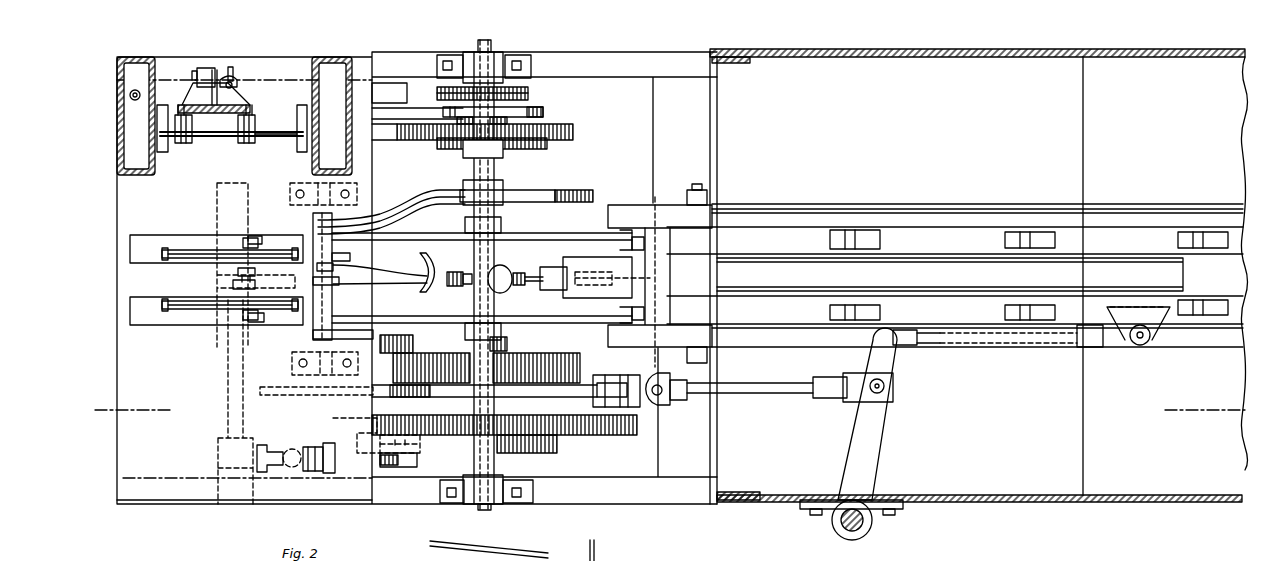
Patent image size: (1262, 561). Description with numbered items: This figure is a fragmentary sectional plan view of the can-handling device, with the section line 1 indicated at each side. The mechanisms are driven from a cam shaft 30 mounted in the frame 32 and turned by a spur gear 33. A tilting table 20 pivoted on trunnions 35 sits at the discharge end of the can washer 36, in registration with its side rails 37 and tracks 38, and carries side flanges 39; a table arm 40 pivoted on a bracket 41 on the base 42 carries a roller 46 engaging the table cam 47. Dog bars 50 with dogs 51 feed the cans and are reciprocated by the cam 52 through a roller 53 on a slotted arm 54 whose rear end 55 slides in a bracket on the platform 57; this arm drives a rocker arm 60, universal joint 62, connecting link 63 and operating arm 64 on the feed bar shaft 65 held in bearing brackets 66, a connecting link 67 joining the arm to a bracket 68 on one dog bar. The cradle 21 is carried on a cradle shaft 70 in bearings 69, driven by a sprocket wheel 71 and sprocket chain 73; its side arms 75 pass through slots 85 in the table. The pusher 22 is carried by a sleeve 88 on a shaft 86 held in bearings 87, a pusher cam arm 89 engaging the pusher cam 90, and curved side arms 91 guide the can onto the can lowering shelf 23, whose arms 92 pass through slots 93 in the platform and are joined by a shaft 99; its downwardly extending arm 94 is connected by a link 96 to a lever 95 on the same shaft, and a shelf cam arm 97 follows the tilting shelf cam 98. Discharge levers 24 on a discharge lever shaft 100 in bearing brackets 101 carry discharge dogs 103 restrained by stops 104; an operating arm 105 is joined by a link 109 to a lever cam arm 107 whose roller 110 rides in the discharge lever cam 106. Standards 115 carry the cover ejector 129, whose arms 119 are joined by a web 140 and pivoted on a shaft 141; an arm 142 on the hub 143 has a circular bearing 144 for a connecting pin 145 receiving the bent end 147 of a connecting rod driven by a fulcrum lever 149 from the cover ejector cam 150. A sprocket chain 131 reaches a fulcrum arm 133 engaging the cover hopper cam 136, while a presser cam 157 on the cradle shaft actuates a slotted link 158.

The section line 1 is at (674, 409).
The tilting table 20 is at (660, 210).
The cradle 21 is at (560, 224).
The pusher 22 is at (400, 282).
The can lowering shelf 23 is at (275, 250).
The discharge levers 24 is at (253, 338).
The cam shaft 30 is at (496, 458).
The frame 32 is at (633, 482).
The spur gear 33 is at (598, 425).
The trunnions 35 is at (687, 358).
The can washer 36 is at (1000, 498).
The side rails 37 is at (820, 338).
The tracks 38 is at (835, 262).
The side flanges 39 is at (645, 348).
The table arm 40 is at (575, 290).
The bracket 41 is at (550, 268).
The base 42 is at (700, 470).
The roller 46 is at (468, 288).
The table cam 47 is at (460, 290).
The dog bars 50 is at (1118, 320).
The dogs 51 is at (1210, 300).
The dog bar cam 52 is at (580, 360).
The roller 53 is at (430, 365).
The reciprocating slotted arm 54 is at (455, 390).
The rear end 55 is at (292, 398).
The platform 57 is at (185, 498).
The rocker arm 60 is at (602, 392).
The universal joint 62 is at (660, 408).
The connecting link 63 is at (770, 393).
The operating arm 64 is at (880, 445).
The feed bar shaft 65 is at (865, 532).
The bearing brackets 66 is at (818, 510).
The connecting link 67 is at (1065, 340).
The bracket 68 is at (1152, 325).
The bearings 69 is at (497, 508).
The cradle shaft 70 is at (478, 510).
The sprocket wheel 71 is at (528, 90).
The sprocket chain 73 is at (528, 97).
The side arms 75 is at (513, 318).
The slots 85 is at (630, 309).
The shaft 86 is at (338, 334).
The bearings 87 is at (292, 371).
The sleeve 88 is at (313, 222).
The pusher cam arm 89 is at (445, 192).
The pusher cam 90 is at (565, 193).
The side arms 91 is at (412, 296).
The arms 92 is at (167, 308).
The slots 93 is at (190, 318).
The downwardly extending arm 94 is at (232, 269).
The lever 95 is at (335, 287).
The link 96 is at (225, 283).
The shelf cam arm 97 is at (392, 336).
The tilting shelf cam 98 is at (508, 342).
The shaft 99 is at (285, 270).
The discharge lever shaft 100 is at (242, 382).
The bearing brackets 101 is at (275, 490).
The discharge dog 103 is at (268, 318).
The stop 104 is at (243, 320).
The operating arm 105 is at (220, 455).
The discharge lever cam 106 is at (548, 453).
The lever cam arm 107 is at (417, 462).
The link 109 is at (328, 438).
The roller 110 is at (420, 445).
The standards 115 is at (350, 99).
The cover ejector arms 119 is at (255, 123).
The cover ejector 129 is at (253, 112).
The sprocket chain 131 is at (128, 96).
The fulcrum arm 133 is at (392, 150).
The cover hopper cam 136 is at (547, 145).
The web 140 is at (208, 140).
The shaft 141 is at (280, 140).
The arm 142 is at (235, 95).
The hub 143 is at (240, 157).
The circular bearing 144 is at (215, 50).
The connecting pin 145 is at (234, 78).
The bent end 147 is at (232, 66).
The fulcrum lever 149 is at (400, 113).
The cover ejector cam 150 is at (545, 111).
The presser cam 157 is at (573, 132).
The slotted link 158 is at (458, 126).